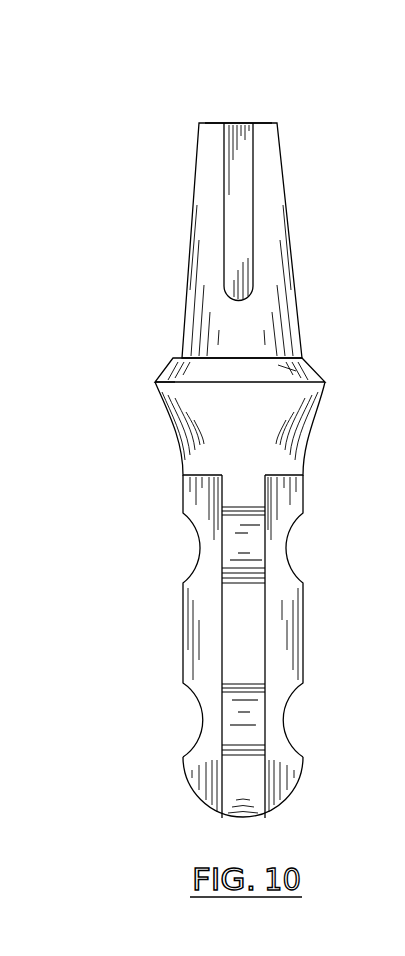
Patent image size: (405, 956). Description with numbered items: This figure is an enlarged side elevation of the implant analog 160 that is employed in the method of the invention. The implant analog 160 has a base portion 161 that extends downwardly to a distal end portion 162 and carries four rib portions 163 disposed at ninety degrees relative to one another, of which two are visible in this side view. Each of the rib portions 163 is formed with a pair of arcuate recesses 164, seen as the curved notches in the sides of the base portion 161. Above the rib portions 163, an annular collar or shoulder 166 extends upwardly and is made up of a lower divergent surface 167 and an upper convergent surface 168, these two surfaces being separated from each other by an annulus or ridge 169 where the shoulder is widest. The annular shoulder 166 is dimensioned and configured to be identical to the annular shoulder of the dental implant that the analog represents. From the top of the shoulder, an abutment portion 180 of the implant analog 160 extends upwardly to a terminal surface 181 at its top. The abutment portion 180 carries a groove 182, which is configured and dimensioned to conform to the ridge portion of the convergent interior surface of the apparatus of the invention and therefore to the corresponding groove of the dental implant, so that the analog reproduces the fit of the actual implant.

The implant analog 160 is at (321, 404).
The base portion 161 is at (303, 637).
The distal end portion 162 is at (255, 818).
The rib portions 163 is at (183, 608).
The arcuate recesses 164 is at (198, 540).
The annular collar or shoulder 166 is at (160, 389).
The lower divergent surface 167 is at (258, 402).
The upper convergent surface 168 is at (290, 370).
The annulus or ridge 169 is at (155, 382).
The abutment portion 180 is at (272, 207).
The terminal surface 181 is at (260, 123).
The groove 182 is at (237, 182).